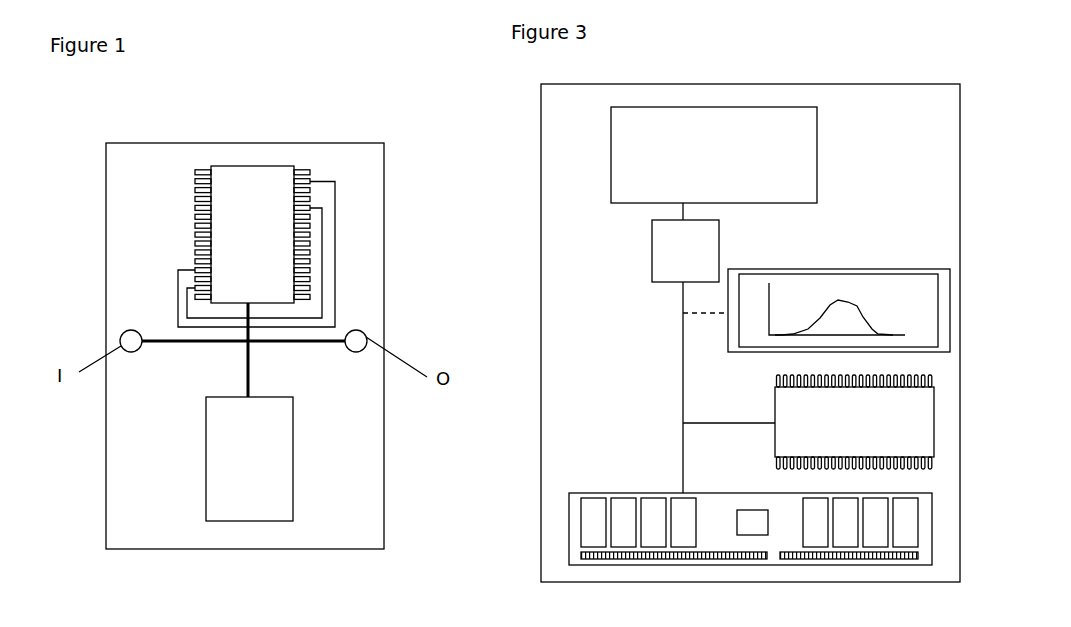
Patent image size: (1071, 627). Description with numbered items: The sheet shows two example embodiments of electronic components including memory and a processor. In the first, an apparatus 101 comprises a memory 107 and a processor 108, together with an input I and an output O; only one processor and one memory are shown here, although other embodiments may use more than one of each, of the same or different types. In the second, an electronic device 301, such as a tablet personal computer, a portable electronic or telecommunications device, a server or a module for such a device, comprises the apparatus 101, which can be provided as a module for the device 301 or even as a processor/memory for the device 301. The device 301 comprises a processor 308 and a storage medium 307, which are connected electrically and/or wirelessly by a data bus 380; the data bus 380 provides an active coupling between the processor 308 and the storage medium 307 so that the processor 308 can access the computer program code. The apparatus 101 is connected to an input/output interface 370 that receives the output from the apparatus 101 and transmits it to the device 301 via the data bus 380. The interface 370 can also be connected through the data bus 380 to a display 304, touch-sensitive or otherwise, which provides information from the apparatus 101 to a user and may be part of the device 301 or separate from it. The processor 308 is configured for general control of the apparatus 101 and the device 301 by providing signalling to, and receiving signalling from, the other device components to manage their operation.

In FIG. 1, the apparatus 101 is at (216, 111).
In FIG. 3, the apparatus 101 is at (714, 155).
In FIG. 1, the processor 108 is at (255, 168).
In FIG. 1, the memory 107 is at (248, 445).
In FIG. 3, the electronic device 301 is at (525, 553).
In FIG. 3, the display 304 is at (853, 286).
In FIG. 3, the input/output interface 370 is at (685, 251).
In FIG. 3, the data bus 380 is at (680, 382).
In FIG. 3, the processor 308 is at (854, 422).
In FIG. 3, the storage medium 307 is at (716, 535).